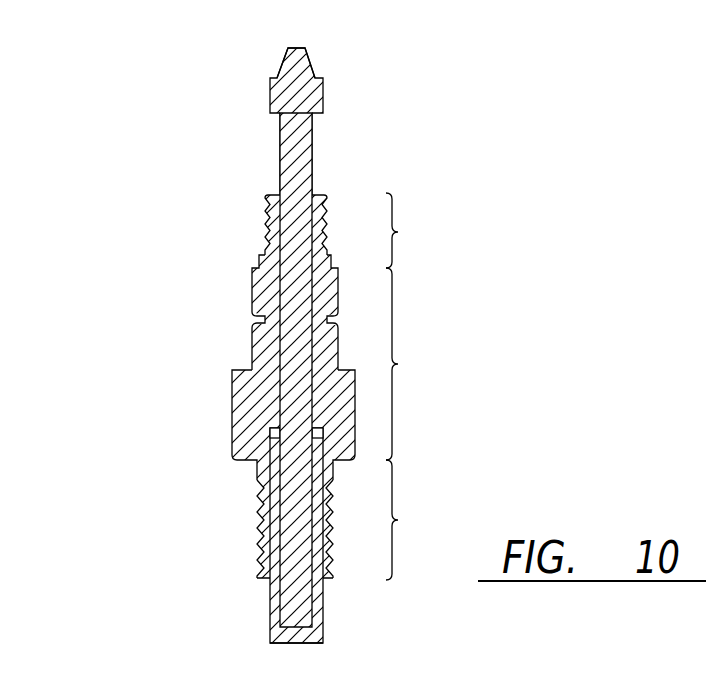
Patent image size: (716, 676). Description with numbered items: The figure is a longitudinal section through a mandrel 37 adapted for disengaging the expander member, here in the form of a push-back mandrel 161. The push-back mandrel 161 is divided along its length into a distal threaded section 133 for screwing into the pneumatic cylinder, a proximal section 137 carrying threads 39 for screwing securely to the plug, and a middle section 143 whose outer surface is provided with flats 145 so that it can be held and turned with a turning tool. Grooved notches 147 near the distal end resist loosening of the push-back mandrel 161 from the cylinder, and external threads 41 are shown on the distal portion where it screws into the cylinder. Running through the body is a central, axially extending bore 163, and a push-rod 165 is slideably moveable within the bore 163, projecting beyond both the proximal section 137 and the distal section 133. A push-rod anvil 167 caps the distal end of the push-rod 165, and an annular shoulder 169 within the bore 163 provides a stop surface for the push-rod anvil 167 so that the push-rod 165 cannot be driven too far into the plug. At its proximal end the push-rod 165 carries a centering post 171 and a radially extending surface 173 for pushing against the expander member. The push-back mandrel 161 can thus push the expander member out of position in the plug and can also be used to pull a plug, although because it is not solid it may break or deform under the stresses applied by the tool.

The centering post 171 is at (308, 64).
The radially extending surface 173 is at (270, 80).
The push-rod 165 is at (280, 157).
The bore 163 is at (312, 178).
The threads 39 is at (265, 230).
The flats 145 is at (252, 292).
The proximal section 137 is at (420, 230).
The middle section 143 is at (420, 364).
The distal threaded section 133 is at (420, 520).
The mandrel 37 is at (190, 473).
The push-back mandrel 161 is at (218, 382).
The annular shoulder 169 is at (272, 437).
The grooved notches 147 is at (270, 440).
The external threads 41 is at (258, 532).
The push-rod anvil 167 is at (323, 640).